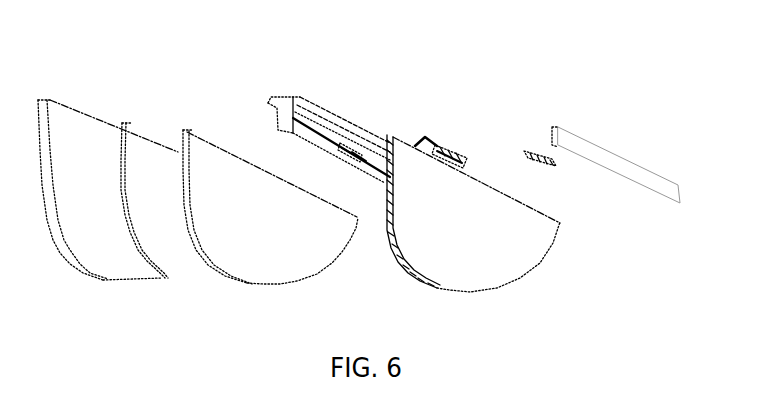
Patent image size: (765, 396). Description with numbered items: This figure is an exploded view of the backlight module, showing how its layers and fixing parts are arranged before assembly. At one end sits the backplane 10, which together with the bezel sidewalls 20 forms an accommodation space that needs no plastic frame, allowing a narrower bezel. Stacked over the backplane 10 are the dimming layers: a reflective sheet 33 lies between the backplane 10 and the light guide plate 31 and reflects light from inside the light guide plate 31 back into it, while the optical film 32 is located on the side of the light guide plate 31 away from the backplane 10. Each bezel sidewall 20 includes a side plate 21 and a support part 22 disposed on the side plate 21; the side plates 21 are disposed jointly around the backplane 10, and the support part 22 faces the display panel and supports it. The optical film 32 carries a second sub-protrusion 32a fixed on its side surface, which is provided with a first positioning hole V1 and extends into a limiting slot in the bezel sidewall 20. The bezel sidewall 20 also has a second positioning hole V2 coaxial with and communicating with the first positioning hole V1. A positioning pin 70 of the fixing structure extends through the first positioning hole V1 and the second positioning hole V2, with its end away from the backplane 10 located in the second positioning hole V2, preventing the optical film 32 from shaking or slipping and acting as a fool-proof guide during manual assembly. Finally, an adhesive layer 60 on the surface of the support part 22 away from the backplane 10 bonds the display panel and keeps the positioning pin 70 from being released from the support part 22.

The backplane 10 is at (45, 100).
The reflective sheet 33 is at (135, 143).
The light guide plate 31 is at (202, 170).
The bezel sidewall 20 is at (329, 103).
The side plate 21 is at (289, 128).
The support part 22 is at (341, 117).
The optical film 32 is at (470, 177).
The second sub-protrusion 32a is at (468, 155).
The first positioning hole V1 is at (435, 147).
The second positioning hole V2 is at (358, 158).
The positioning pin 70 is at (532, 152).
The adhesive layer 60 is at (588, 145).